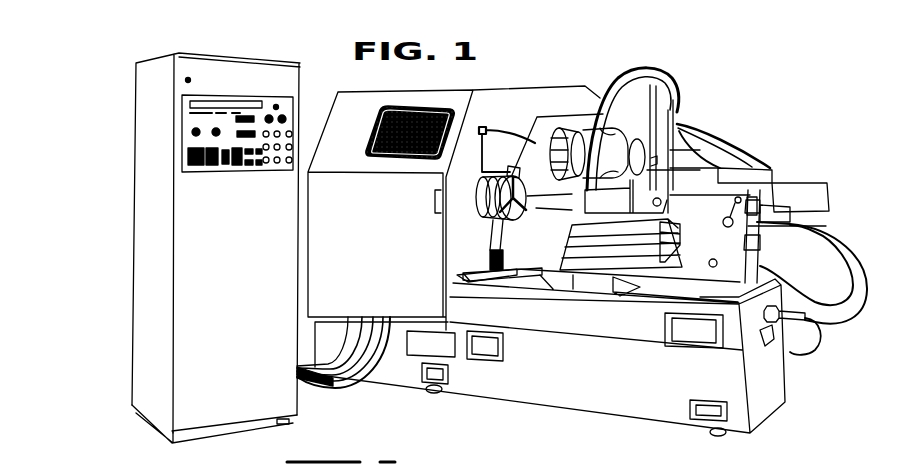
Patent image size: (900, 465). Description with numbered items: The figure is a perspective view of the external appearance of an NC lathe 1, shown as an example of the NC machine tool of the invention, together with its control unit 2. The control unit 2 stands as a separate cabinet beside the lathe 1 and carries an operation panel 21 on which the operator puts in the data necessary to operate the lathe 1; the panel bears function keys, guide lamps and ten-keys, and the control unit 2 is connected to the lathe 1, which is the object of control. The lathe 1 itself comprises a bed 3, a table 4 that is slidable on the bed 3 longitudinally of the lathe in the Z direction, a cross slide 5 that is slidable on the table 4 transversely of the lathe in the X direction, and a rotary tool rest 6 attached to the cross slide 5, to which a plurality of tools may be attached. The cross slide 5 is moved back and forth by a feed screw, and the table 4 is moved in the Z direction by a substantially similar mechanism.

The lathe 1 is at (782, 117).
The control unit 2 is at (128, 155).
The operation panel 21 is at (263, 98).
The bed 3 is at (584, 307).
The table 4 is at (693, 127).
The cross slide 5 is at (620, 92).
The rotary tool rest 6 is at (562, 130).